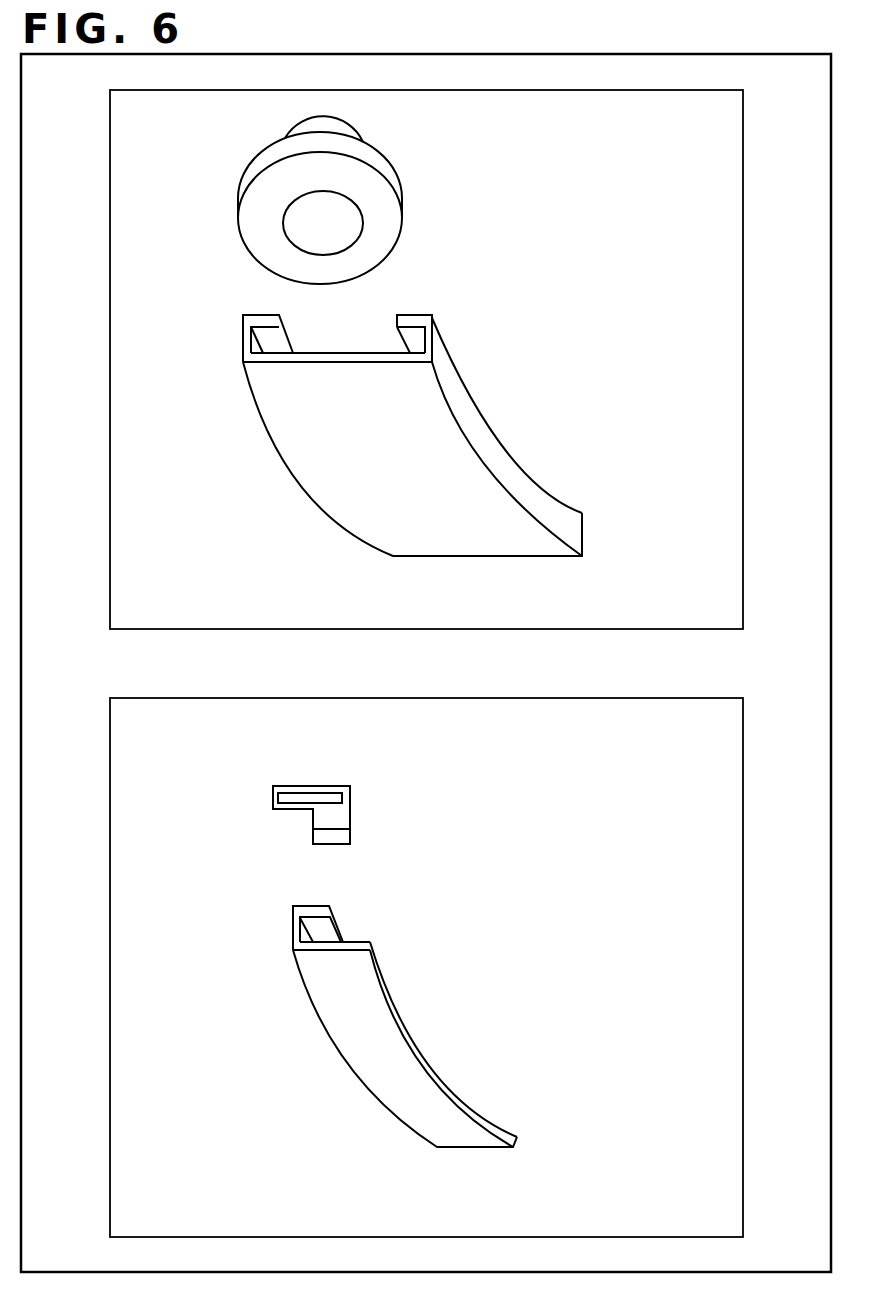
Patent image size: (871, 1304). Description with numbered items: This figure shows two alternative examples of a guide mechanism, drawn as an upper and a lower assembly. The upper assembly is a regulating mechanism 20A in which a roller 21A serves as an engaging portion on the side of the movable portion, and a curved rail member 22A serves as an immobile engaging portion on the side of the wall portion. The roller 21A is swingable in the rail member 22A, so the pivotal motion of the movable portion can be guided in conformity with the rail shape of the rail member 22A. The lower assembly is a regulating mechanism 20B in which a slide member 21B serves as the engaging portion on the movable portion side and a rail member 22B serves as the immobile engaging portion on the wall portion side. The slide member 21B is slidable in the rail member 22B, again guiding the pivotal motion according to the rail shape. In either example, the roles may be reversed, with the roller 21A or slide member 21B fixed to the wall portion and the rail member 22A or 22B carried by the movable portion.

The regulating mechanism 20A is at (662, 219).
The roller 21A is at (388, 218).
The rail member 22A is at (522, 480).
The regulating mechanism 20B is at (677, 758).
The slide member 21B is at (350, 817).
The rail member 22B is at (397, 1000).